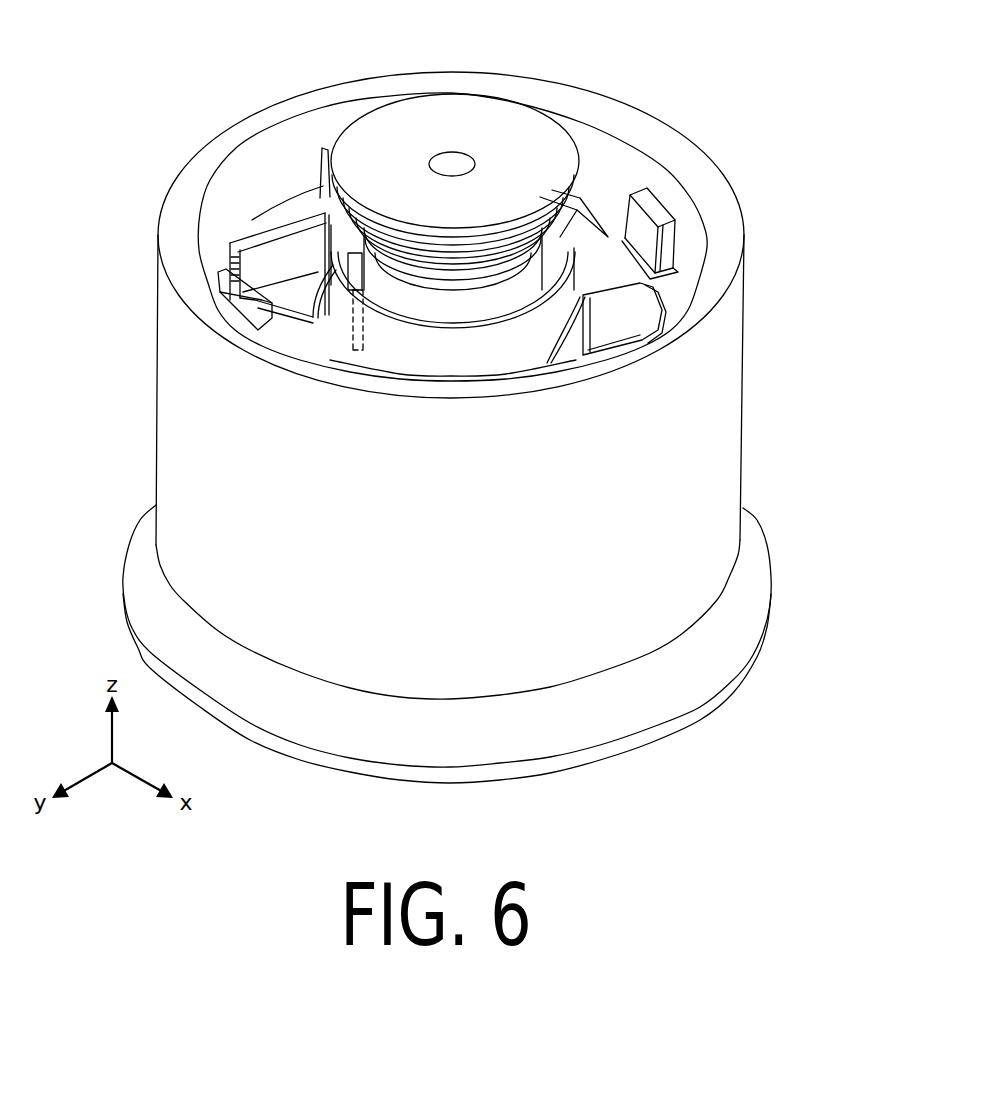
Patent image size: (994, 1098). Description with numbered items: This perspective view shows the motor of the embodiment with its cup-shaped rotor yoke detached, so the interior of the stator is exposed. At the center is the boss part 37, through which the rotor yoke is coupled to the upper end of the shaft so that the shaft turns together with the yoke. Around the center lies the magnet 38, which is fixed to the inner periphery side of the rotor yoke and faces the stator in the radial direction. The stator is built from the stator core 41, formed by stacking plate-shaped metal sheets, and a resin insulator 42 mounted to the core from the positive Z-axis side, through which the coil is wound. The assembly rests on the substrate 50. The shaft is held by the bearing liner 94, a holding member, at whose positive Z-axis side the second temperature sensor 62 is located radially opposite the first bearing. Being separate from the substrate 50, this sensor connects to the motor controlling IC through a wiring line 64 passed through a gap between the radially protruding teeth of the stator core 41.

The boss part 37 is at (450, 120).
The magnet 38 is at (688, 433).
The stator core 41 is at (577, 352).
The insulator 42 is at (667, 247).
The substrate 50 is at (742, 594).
The second temperature sensor 62 is at (323, 268).
The wiring line 64 is at (350, 333).
The bearing liner 94 is at (507, 293).